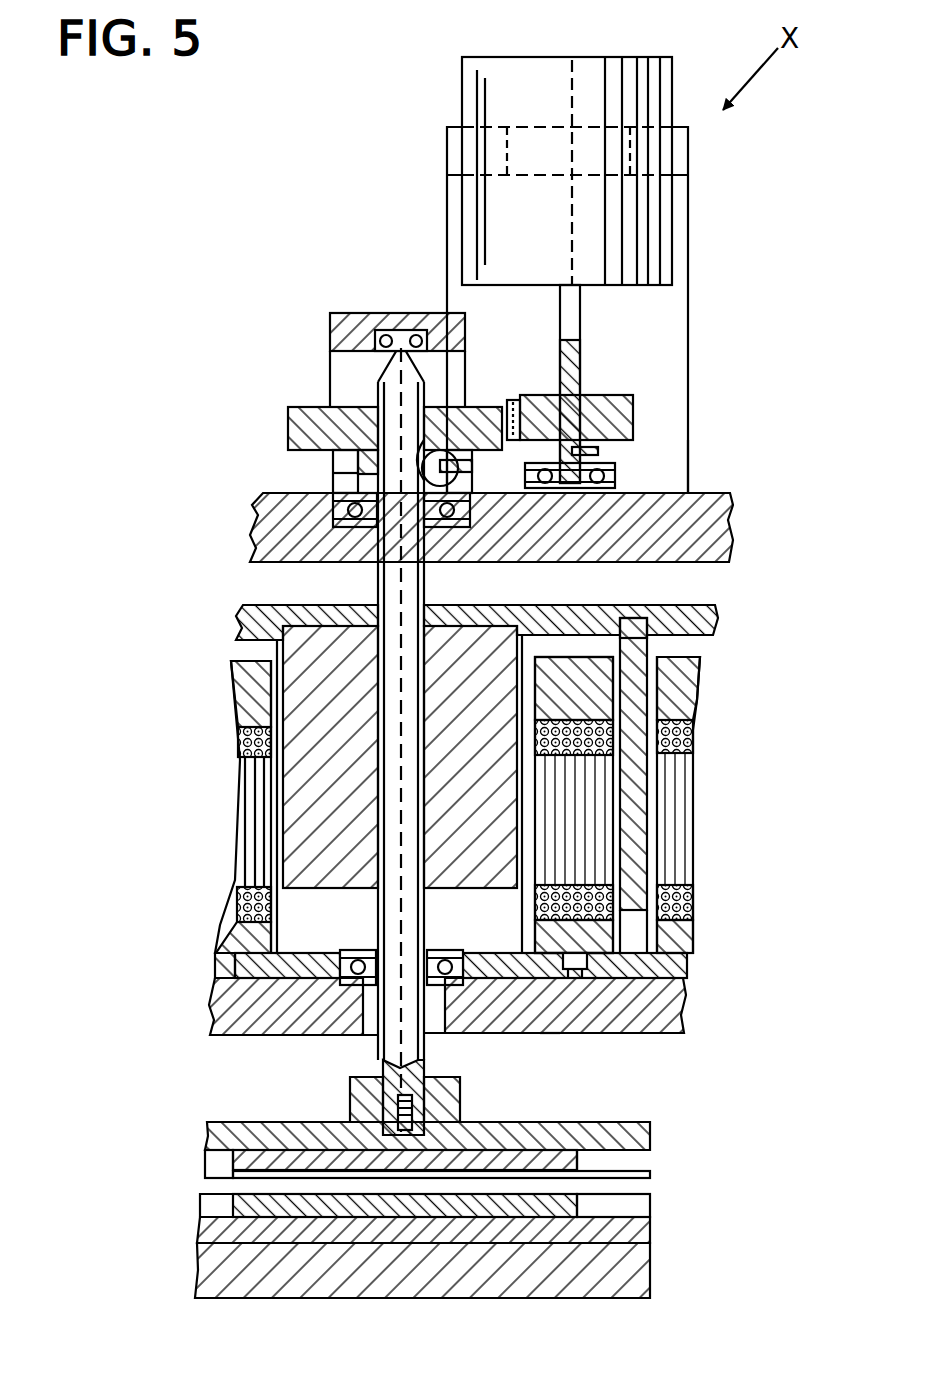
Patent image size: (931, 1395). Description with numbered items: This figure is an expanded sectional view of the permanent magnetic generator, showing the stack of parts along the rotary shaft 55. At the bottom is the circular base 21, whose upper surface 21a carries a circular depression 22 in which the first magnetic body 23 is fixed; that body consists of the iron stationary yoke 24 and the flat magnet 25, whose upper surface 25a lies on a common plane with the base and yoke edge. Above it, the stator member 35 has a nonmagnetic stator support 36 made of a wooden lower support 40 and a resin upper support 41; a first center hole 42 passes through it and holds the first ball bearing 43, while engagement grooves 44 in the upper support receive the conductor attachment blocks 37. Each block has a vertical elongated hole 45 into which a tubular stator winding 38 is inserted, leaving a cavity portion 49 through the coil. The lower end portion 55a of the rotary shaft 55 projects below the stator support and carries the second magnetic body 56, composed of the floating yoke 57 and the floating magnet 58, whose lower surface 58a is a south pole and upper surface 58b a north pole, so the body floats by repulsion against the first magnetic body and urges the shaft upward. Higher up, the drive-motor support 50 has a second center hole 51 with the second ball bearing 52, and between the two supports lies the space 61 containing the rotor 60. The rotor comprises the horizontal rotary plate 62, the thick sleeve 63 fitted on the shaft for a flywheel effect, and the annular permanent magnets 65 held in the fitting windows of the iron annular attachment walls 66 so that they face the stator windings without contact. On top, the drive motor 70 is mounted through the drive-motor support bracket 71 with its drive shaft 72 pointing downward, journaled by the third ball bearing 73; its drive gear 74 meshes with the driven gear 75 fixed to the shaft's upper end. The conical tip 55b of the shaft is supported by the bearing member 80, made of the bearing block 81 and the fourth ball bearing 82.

The drive motor 70 is at (650, 105).
The drive-motor support bracket 71 is at (680, 322).
The drive shaft 72 is at (580, 316).
The third ball bearing 73 is at (612, 478).
The drive gear 74 is at (592, 402).
The driven gear 75 is at (320, 410).
The bearing member 80 is at (347, 313).
The bearing block 81 is at (398, 320).
The fourth ball bearing 82 is at (435, 332).
The upper end of spindle 55b is at (412, 410).
The second ball bearing 52 is at (332, 503).
The second center hole 51 is at (440, 556).
The drive-motor support 50 is at (722, 522).
The space 61 is at (702, 492).
The rotary plate 62 is at (265, 602).
The annular attachment walls 66 is at (632, 625).
The annular permanent magnets 65 is at (648, 860).
The rotor 60 is at (718, 612).
The sleeve 63 is at (292, 646).
The rotary shaft 55 is at (398, 578).
The conductor attachment blocks 37 is at (250, 692).
The stator windings 38 is at (240, 734).
The vertical elongated hole 45 is at (234, 900).
The cavity portion 49 is at (250, 798).
The stator member 35 is at (695, 958).
The first ball bearing 43 is at (356, 952).
The upper support 41 is at (492, 952).
The engagement grooves 44 is at (230, 960).
The lower support 40 is at (686, 1012).
The first center hole 42 is at (435, 1033).
The first magnetic body 23 is at (559, 1051).
The stator support 36 is at (648, 1014).
The lower end portion 55a is at (440, 1100).
The floating magnet 58 is at (276, 1150).
The floating yoke 57 is at (214, 1124).
The lower surface 58a is at (314, 1168).
The upper surface 58b is at (556, 1136).
The upper surface 21a is at (617, 1188).
The upper surface 25a is at (408, 1192).
The circular depression 22 is at (642, 1230).
The magnet 25 is at (345, 1218).
The stationary yoke 24 is at (488, 1200).
The base 21 is at (642, 1276).
The second magnetic body 56 is at (232, 1187).